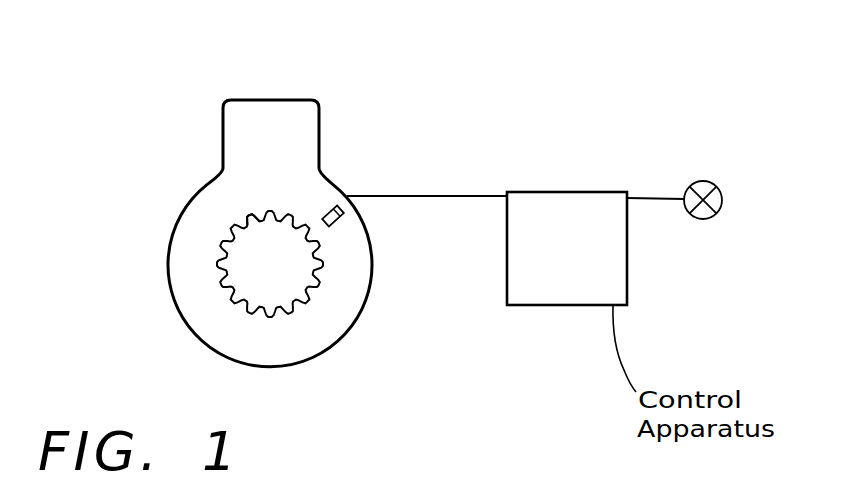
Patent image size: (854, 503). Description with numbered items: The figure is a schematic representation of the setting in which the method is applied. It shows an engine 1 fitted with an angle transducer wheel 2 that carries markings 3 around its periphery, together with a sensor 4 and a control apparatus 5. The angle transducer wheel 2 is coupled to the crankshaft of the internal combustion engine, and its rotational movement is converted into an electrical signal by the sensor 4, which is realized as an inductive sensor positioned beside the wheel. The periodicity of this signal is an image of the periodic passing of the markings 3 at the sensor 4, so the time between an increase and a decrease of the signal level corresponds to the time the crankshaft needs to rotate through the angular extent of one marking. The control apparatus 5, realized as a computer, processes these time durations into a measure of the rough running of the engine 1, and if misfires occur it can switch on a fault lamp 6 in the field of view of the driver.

The engine 1 is at (266, 118).
The angle transducer wheel 2 is at (223, 265).
The markings 3 is at (237, 220).
The sensor 4 is at (345, 215).
The control apparatus 5 is at (570, 293).
The fault lamp 6 is at (705, 219).